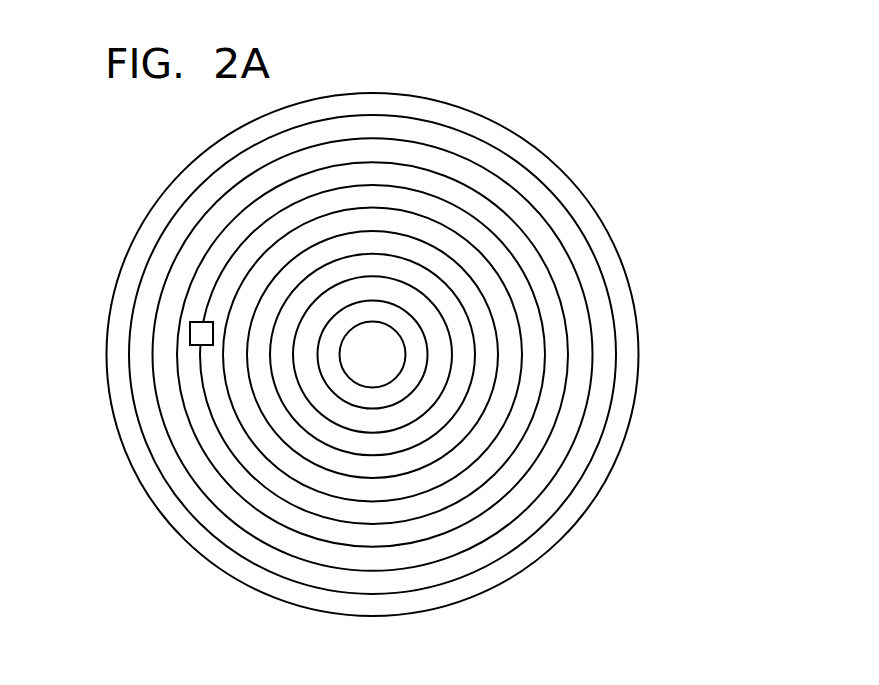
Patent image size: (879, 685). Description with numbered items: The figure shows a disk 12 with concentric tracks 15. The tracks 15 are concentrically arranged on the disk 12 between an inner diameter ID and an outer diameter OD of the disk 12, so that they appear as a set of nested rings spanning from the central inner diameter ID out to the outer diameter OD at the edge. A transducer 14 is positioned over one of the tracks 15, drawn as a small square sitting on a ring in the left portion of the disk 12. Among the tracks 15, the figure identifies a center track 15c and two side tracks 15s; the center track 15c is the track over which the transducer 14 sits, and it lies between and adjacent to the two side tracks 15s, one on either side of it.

The disk 12 is at (178, 155).
The transducer 14 is at (190, 333).
The tracks 15 is at (154, 391).
The side tracks 15s is at (257, 258).
The center track 15c is at (208, 293).
The outer diameter OD is at (125, 452).
The inner diameter ID is at (393, 381).